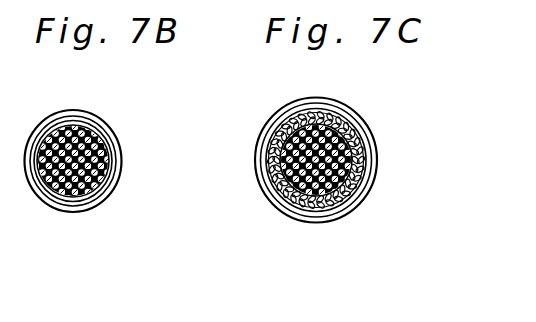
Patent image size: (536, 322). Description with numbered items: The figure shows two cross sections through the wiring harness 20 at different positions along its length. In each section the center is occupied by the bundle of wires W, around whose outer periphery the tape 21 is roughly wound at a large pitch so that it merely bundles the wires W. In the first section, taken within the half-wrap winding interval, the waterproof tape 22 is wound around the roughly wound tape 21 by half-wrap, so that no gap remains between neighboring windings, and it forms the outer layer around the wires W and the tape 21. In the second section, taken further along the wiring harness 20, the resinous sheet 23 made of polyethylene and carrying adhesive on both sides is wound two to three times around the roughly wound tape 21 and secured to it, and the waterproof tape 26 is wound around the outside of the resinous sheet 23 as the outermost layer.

In FIG. 7C, the wiring harness 20 is at (333, 188).
In FIG. 7B, the tape 21 is at (108, 165).
In FIG. 7C, the tape 21 is at (281, 194).
In FIG. 7B, the waterproof tape 22 is at (106, 120).
In FIG. 7C, the resinous sheet 23 is at (267, 158).
In FIG. 7C, the waterproof tape 26 is at (343, 212).
In FIG. 7B, the wires W is at (68, 196).
In FIG. 7C, the wires W is at (313, 196).